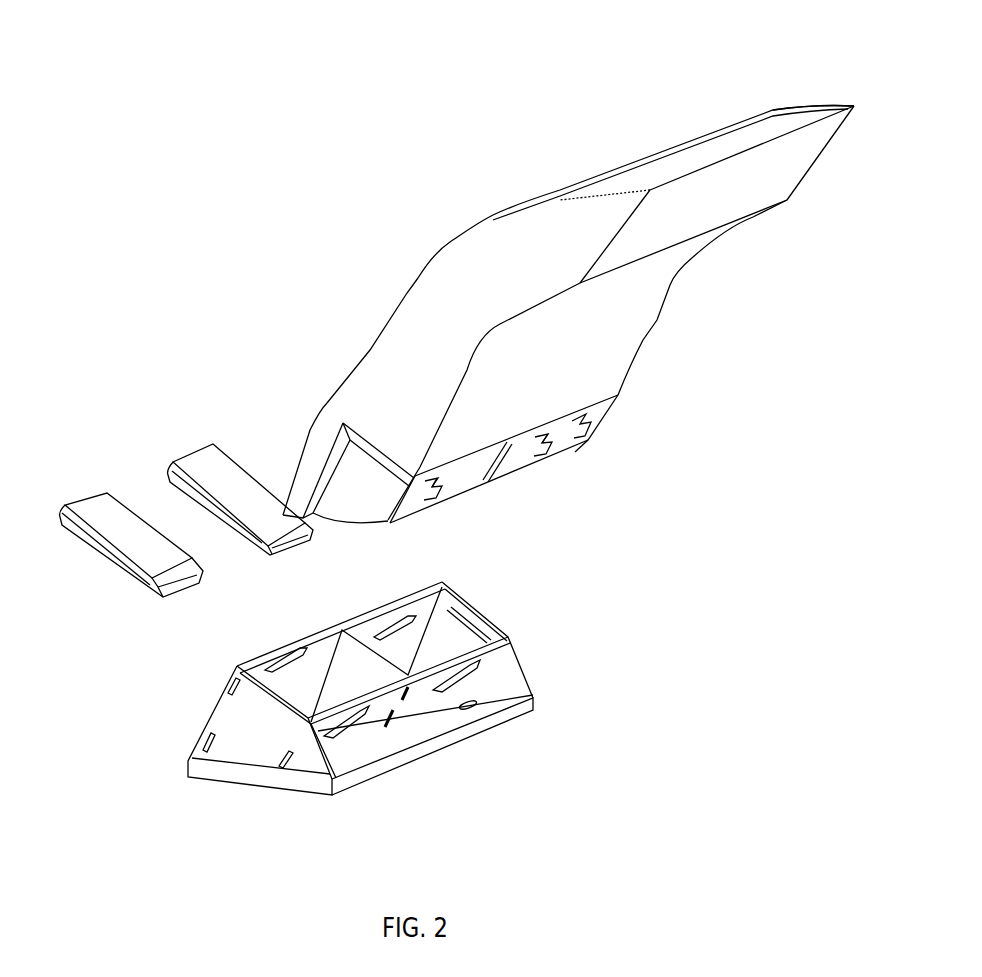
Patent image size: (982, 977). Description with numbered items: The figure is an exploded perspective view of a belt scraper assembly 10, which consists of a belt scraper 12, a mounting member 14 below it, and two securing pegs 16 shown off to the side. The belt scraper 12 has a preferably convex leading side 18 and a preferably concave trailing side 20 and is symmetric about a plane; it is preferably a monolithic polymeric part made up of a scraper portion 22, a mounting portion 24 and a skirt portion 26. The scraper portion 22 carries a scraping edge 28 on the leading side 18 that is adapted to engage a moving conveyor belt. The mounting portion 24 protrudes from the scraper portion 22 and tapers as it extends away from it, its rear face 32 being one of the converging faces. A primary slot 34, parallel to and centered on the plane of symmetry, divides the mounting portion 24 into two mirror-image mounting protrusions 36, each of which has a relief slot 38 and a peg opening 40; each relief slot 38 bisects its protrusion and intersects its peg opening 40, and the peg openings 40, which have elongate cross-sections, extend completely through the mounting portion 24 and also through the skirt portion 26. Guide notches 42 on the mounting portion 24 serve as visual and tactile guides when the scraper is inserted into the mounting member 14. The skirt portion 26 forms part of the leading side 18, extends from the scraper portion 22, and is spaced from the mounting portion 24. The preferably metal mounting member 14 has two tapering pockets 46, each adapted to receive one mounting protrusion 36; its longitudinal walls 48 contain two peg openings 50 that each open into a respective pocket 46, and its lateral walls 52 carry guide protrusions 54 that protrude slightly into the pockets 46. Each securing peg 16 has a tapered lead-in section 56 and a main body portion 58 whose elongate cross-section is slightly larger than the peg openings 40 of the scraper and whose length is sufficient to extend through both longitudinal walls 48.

The belt scraper assembly 10 is at (293, 50).
The belt scraper 12 is at (634, 180).
The mounting member 14 is at (237, 752).
The securing pegs 16 is at (113, 558).
The leading side 18 is at (725, 145).
The trailing side 20 is at (645, 318).
The scraper portion 22 is at (427, 298).
The mounting portion 24 is at (578, 428).
The skirt portion 26 is at (318, 453).
The scraping edge 28 is at (820, 120).
The rear face 32 is at (515, 458).
The primary slot 34 is at (490, 468).
The mounting protrusions 36 is at (410, 502).
The relief slot 38 is at (437, 493).
The peg openings 40 is at (450, 475).
The guide notches 42 is at (357, 522).
The pockets 46 is at (280, 663).
The longitudinal walls 48 is at (292, 693).
The peg openings 50 is at (339, 717).
The lateral walls 52 is at (222, 746).
The guide protrusions 54 is at (465, 618).
The tapered lead-in section 56 is at (147, 592).
The main body portion 58 is at (83, 535).